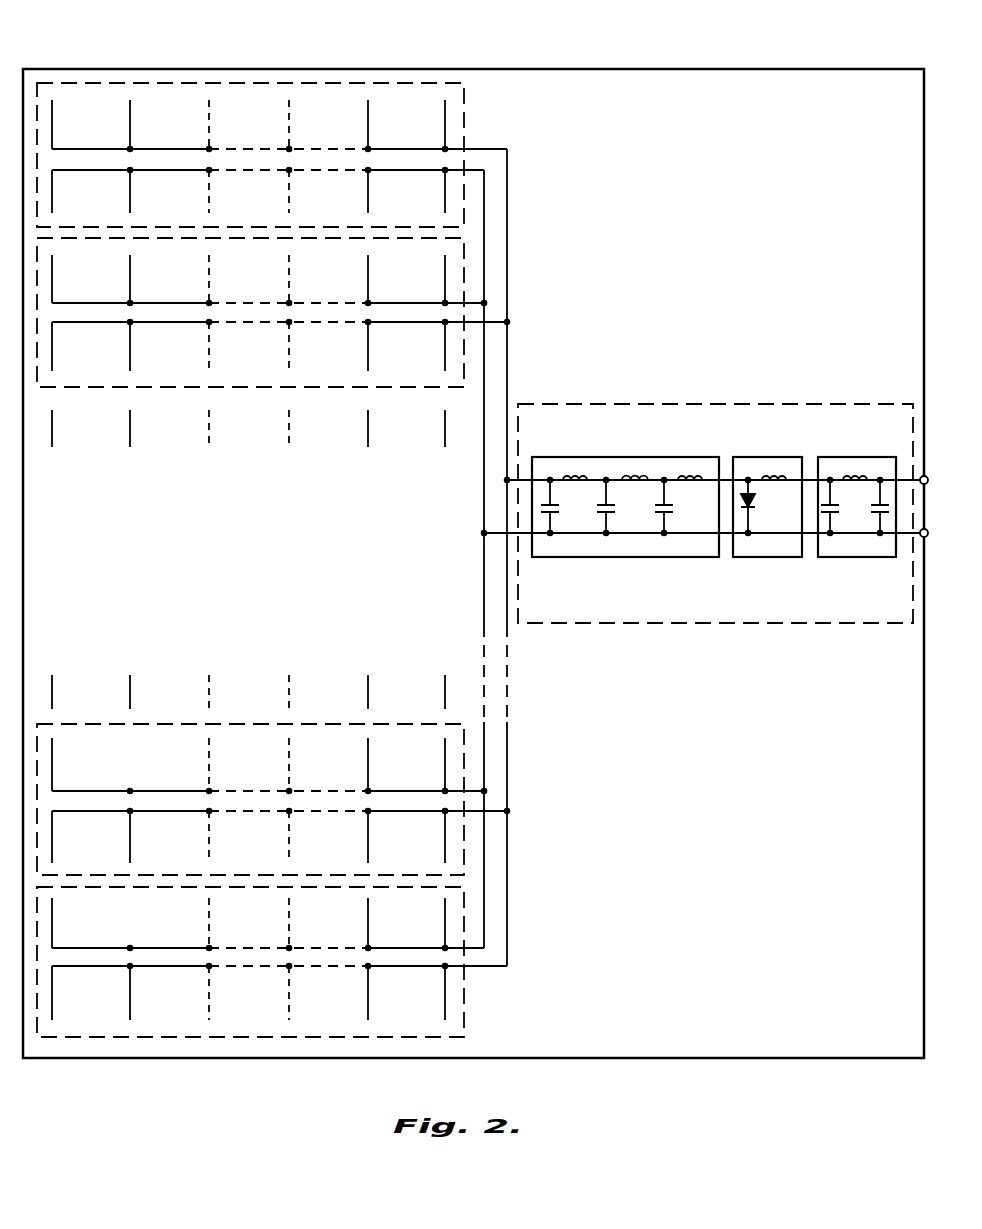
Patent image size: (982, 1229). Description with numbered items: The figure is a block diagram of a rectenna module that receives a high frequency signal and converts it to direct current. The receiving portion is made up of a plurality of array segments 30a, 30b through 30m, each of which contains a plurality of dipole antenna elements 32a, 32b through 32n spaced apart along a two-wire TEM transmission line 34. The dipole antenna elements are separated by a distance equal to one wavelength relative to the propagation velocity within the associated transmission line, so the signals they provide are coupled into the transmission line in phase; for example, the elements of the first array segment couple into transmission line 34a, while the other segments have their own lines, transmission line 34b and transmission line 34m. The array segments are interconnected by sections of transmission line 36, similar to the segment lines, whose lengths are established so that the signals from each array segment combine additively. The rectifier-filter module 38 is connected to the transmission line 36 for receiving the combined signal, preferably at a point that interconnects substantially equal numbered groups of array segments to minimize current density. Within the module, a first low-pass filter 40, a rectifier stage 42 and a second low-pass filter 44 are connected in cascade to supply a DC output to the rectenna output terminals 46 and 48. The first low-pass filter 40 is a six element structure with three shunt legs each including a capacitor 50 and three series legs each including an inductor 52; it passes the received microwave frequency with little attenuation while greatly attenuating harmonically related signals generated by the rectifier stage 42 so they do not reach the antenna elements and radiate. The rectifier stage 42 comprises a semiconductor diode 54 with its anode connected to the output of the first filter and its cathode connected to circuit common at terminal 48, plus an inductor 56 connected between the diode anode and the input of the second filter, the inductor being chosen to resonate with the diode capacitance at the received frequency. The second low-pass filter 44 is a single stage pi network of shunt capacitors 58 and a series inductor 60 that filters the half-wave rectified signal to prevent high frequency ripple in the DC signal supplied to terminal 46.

The array segment 30a is at (117, 93).
The array segment 30b is at (98, 375).
The array segment 30m is at (457, 1013).
The dipole antenna element 32a is at (57, 141).
The dipole antenna element 32b is at (135, 135).
The dipole antenna element 32n is at (445, 140).
The transmission line 34a is at (97, 162).
The transmission line 34b is at (406, 312).
The two-wire (TEM) transmission line 34 is at (97, 799).
The transmission line 34m is at (402, 957).
The transmission line 36 is at (492, 238).
The rectifier-filter module 38 is at (904, 602).
The first low-pass filter 40 is at (650, 457).
The rectifier stage 42 is at (762, 457).
The second low-pass filter 44 is at (853, 457).
The rectenna output terminal 46 is at (924, 476).
The rectenna output terminal 48 is at (924, 537).
The capacitor 50 is at (560, 505).
The inductor 52 is at (576, 479).
The semiconductor diode 54 is at (757, 505).
The inductor 56 is at (780, 479).
The shunt capacitor 58 is at (860, 541).
The series inductor 60 is at (867, 479).